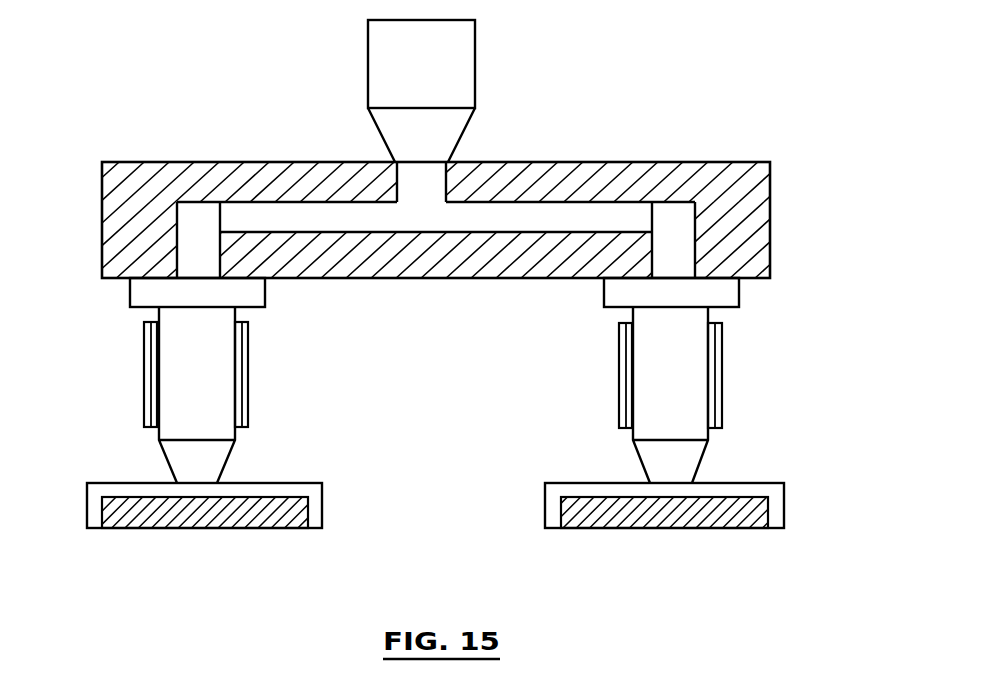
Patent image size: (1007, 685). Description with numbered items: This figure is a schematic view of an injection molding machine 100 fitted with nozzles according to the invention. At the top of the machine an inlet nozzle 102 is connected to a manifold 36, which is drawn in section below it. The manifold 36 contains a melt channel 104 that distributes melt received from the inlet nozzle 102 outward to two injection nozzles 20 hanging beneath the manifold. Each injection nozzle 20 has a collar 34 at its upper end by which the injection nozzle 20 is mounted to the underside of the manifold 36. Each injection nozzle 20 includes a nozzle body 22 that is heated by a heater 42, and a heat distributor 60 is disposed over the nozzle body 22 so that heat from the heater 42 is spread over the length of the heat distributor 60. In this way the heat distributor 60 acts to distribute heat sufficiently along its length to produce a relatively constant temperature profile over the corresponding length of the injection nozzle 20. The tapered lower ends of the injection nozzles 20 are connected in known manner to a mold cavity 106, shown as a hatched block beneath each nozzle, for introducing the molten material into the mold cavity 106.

The injection molding machine 100 is at (138, 104).
The inlet nozzle 102 is at (453, 60).
The melt channel 104 is at (274, 222).
The manifold 36 is at (770, 176).
The collar 34 is at (143, 293).
The injection nozzle 20 is at (100, 442).
The nozzle body 22 is at (205, 413).
The heat distributor 60 is at (245, 340).
The heater 42 is at (237, 375).
The mold cavity 106 is at (322, 497).